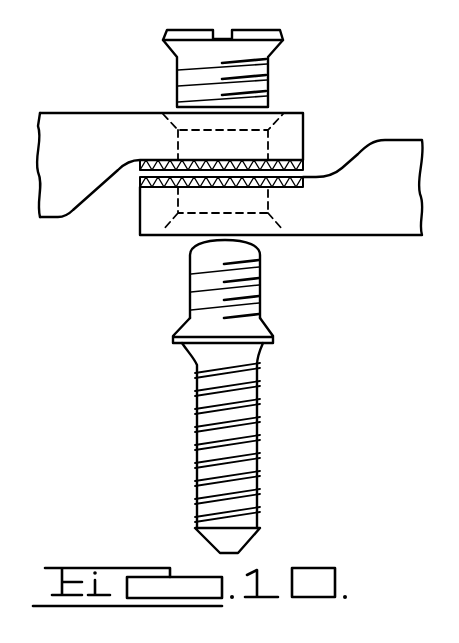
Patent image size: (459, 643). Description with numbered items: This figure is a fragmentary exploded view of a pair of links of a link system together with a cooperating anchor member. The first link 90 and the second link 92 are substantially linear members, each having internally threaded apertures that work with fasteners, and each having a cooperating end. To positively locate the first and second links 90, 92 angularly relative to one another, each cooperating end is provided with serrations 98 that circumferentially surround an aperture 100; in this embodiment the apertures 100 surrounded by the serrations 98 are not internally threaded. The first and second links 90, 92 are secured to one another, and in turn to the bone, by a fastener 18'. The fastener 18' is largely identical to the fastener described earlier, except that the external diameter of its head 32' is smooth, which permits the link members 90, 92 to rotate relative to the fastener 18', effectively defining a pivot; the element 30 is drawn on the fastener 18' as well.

The second link 92 is at (74, 113).
The first link 90 is at (343, 237).
The serrations 98 is at (297, 175).
The aperture 100 is at (279, 110).
The head 32' is at (256, 55).
The fastener 18' is at (180, 396).
The screw head flange 30 is at (278, 330).